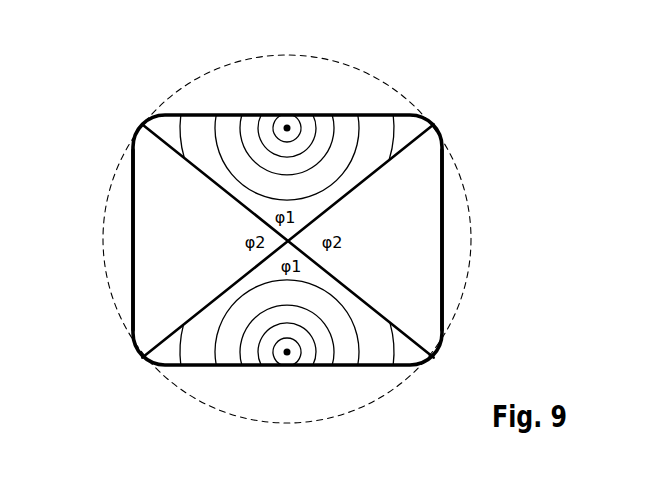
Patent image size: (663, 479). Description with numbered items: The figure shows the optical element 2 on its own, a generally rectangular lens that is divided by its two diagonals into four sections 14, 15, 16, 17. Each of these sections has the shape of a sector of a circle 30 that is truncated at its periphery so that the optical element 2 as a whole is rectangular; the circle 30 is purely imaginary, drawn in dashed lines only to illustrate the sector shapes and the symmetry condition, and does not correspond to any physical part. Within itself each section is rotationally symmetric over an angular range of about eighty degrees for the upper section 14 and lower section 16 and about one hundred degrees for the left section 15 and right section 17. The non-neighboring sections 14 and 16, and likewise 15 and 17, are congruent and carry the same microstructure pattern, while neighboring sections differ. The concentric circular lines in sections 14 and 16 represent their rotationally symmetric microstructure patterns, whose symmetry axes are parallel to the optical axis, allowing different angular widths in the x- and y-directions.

The optical element 2 is at (425, 127).
The upper section 14 is at (360, 143).
The lower section 16 is at (354, 345).
The left section 15 is at (163, 263).
The right section 17 is at (418, 243).
The circle 30 is at (460, 308).